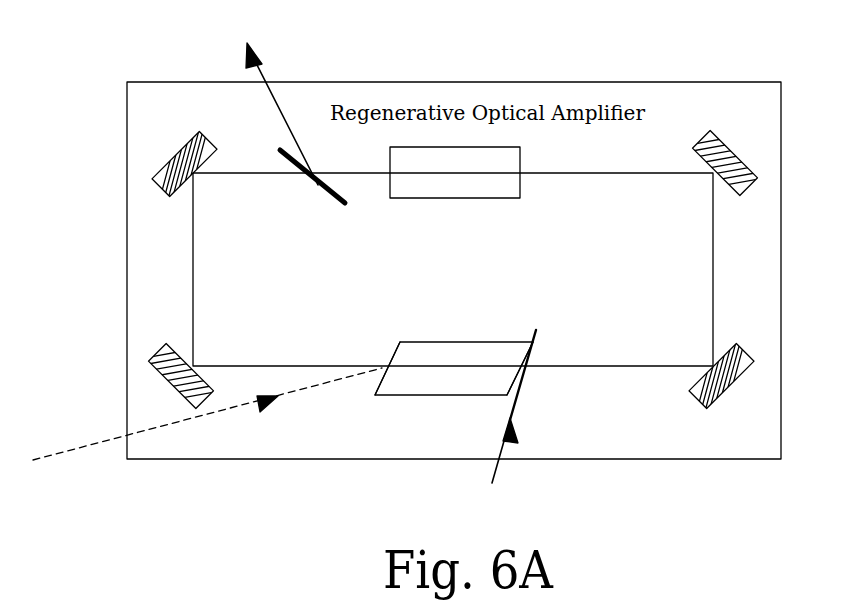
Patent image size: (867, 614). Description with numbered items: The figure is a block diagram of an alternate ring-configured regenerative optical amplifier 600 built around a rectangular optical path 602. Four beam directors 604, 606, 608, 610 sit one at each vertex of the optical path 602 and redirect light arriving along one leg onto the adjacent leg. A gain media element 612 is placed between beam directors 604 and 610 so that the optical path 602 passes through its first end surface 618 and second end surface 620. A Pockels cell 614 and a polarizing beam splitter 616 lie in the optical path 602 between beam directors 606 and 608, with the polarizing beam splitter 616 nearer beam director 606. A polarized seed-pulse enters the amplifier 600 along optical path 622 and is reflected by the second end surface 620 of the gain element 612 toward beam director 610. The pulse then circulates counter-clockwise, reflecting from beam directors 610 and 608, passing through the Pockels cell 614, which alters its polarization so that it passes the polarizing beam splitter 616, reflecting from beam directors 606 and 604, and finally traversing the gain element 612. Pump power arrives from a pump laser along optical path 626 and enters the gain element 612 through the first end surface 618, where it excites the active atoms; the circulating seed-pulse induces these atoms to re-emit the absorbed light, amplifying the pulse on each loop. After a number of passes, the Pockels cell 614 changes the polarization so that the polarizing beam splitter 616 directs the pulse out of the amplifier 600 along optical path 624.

The regenerative optical amplifier 600 is at (670, 459).
The optical path 602 is at (713, 242).
The beam director 604 is at (167, 387).
The beam director 606 is at (188, 136).
The beam director 608 is at (728, 148).
The beam director 610 is at (723, 396).
The gain media element 612 is at (482, 340).
The Pockels cell 614 is at (445, 198).
The polarizing beam splitter 616 is at (310, 186).
The first end surface 618 is at (397, 353).
The second end surface 620 is at (530, 343).
The optical path 622 is at (497, 462).
The optical path 624 is at (260, 64).
The optical path 626 is at (67, 452).